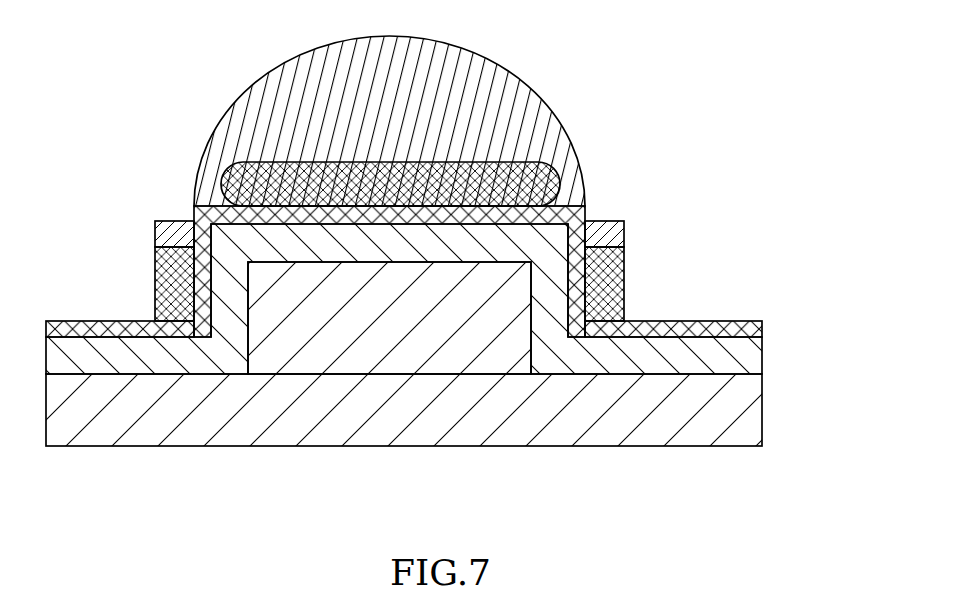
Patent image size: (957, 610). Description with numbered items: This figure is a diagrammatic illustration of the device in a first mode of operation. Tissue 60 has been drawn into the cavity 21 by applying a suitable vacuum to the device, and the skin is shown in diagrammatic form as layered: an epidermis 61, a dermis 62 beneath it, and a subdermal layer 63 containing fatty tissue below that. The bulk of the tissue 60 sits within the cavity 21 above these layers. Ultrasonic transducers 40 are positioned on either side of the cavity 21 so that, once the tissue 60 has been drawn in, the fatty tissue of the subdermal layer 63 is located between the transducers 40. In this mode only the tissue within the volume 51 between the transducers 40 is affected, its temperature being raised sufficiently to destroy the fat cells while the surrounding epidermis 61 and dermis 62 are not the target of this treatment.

The tissue 60 is at (585, 213).
The cavity 21 is at (570, 234).
The ultrasonic transducers 40 is at (607, 277).
The volume 51 is at (368, 337).
The epidermis 61 is at (753, 330).
The dermis 62 is at (753, 358).
The subdermal layer 63 is at (753, 422).